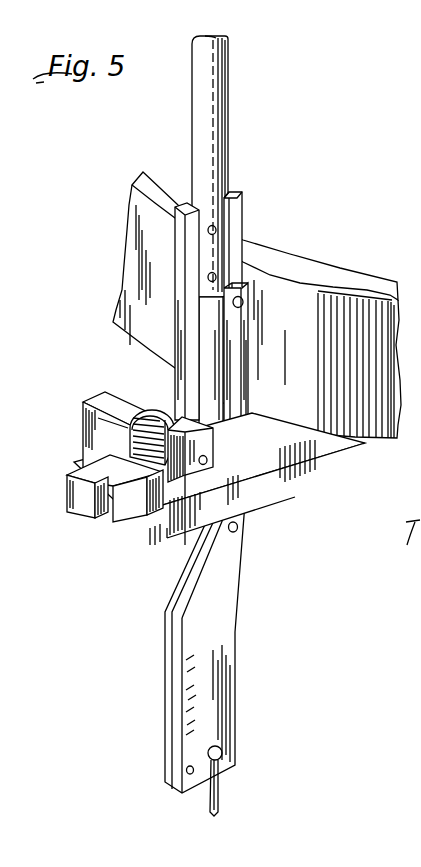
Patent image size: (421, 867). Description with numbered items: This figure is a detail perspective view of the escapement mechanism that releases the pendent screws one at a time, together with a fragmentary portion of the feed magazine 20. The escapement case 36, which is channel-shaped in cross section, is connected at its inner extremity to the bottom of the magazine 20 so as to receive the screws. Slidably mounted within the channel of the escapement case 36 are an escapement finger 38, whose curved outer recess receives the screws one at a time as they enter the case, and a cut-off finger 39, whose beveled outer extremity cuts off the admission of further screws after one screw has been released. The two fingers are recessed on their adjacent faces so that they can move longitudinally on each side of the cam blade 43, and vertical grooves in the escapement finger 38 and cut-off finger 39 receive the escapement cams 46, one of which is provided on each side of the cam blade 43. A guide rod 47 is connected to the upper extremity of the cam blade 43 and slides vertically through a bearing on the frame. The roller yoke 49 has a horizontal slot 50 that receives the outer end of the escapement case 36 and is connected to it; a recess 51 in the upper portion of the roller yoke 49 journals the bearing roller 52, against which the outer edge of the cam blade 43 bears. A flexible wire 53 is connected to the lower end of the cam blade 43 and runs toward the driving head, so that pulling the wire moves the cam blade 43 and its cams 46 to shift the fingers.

The magazine 20 is at (283, 297).
The escapement case 36 is at (325, 467).
The escapement finger 38 is at (75, 498).
The cut-off finger 39 is at (255, 443).
The cam blade 43 is at (228, 667).
The escapement cams 46 is at (237, 363).
The guide rod 47 is at (212, 95).
The roller yoke 49 is at (93, 435).
The horizontal slot 50 is at (180, 508).
The recess 51 is at (100, 420).
The bearing roller 52 is at (147, 420).
The flexible wire 53 is at (218, 787).